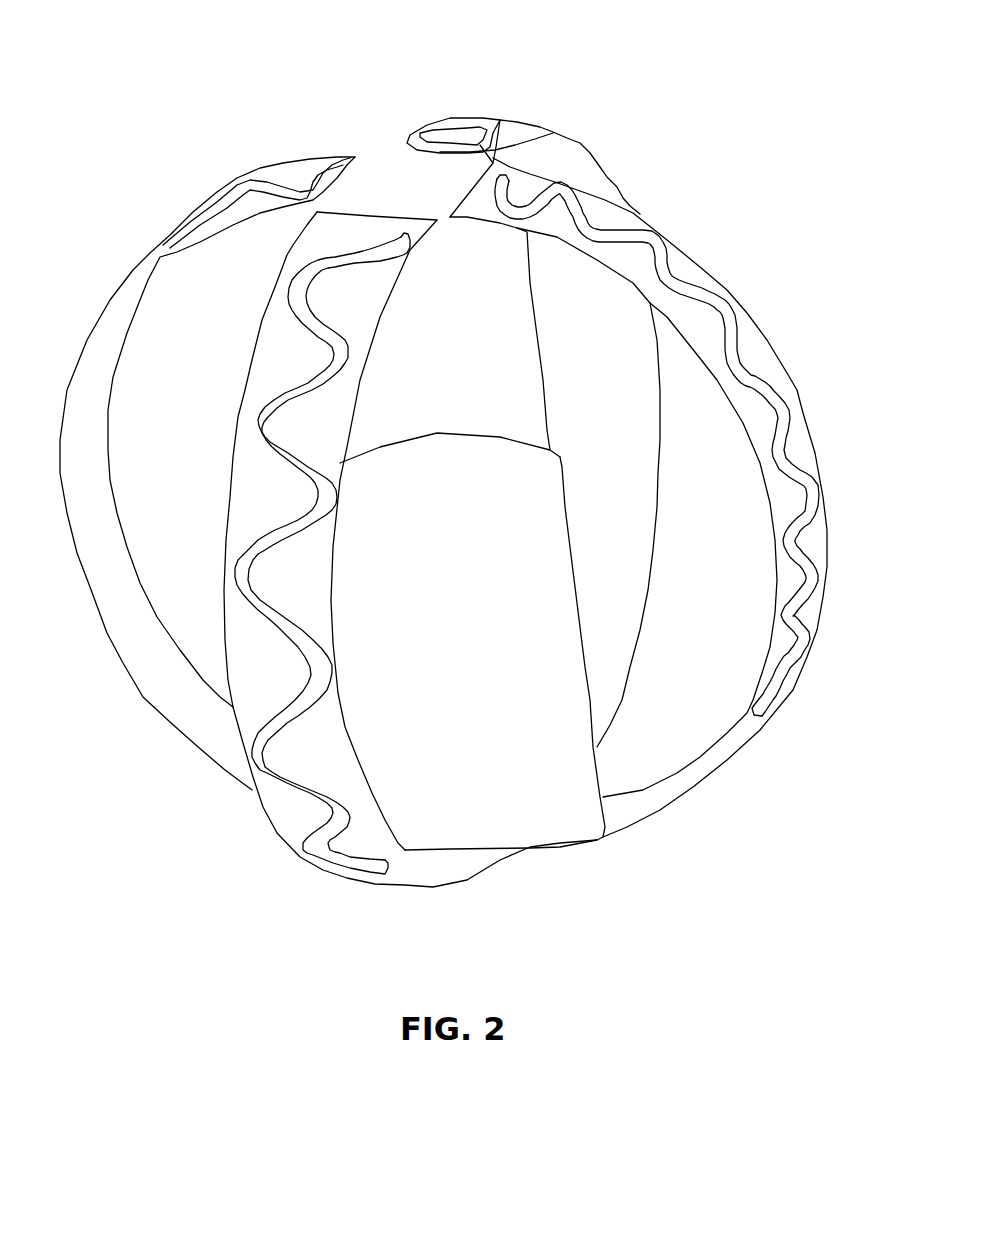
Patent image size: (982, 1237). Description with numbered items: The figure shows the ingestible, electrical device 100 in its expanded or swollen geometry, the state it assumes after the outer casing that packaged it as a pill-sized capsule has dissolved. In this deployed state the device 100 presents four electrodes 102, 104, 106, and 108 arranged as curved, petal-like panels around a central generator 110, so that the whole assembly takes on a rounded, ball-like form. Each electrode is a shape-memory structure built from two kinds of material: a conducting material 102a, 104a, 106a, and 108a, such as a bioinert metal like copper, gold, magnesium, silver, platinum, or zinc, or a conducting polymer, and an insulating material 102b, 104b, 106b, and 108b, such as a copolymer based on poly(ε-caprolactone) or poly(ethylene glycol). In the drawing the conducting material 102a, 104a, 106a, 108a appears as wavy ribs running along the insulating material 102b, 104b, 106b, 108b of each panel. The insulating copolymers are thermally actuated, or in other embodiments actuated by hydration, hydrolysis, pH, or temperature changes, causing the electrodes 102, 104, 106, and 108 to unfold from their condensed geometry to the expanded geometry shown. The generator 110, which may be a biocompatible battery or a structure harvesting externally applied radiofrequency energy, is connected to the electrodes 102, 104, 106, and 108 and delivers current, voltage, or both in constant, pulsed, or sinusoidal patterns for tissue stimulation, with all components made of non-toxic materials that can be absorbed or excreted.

The ingestible electrical device 100 is at (432, 447).
The electrode 102 is at (196, 440).
The conducting material 102a is at (247, 189).
The insulating material 102b is at (256, 167).
The electrode 104 is at (634, 480).
The conducting material 104a is at (663, 448).
The insulating material 104b is at (651, 445).
The electrode 106 is at (377, 549).
The conducting material 106a is at (282, 556).
The insulating material 106b is at (289, 553).
The electrode 108 is at (596, 453).
The conducting material 108a is at (493, 116).
The insulating material 108b is at (432, 112).
The generator 110 is at (472, 621).